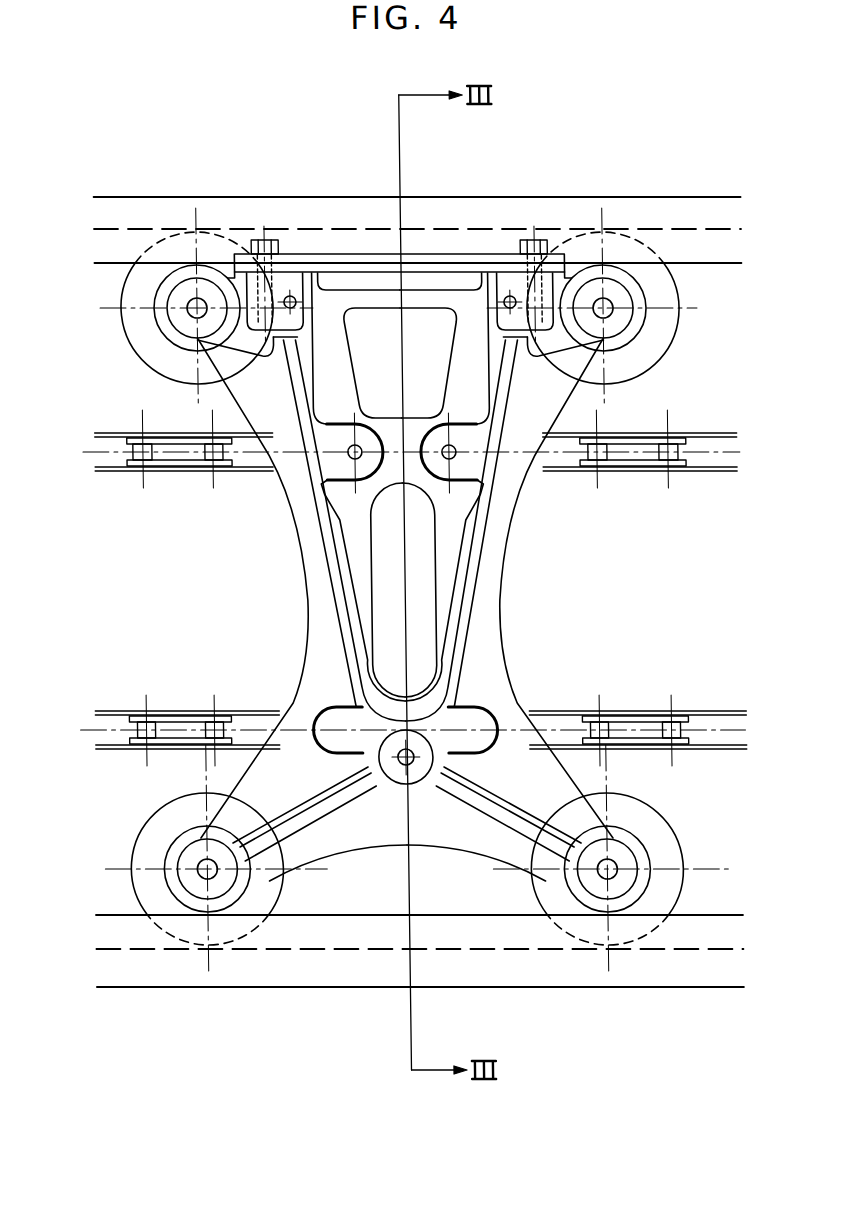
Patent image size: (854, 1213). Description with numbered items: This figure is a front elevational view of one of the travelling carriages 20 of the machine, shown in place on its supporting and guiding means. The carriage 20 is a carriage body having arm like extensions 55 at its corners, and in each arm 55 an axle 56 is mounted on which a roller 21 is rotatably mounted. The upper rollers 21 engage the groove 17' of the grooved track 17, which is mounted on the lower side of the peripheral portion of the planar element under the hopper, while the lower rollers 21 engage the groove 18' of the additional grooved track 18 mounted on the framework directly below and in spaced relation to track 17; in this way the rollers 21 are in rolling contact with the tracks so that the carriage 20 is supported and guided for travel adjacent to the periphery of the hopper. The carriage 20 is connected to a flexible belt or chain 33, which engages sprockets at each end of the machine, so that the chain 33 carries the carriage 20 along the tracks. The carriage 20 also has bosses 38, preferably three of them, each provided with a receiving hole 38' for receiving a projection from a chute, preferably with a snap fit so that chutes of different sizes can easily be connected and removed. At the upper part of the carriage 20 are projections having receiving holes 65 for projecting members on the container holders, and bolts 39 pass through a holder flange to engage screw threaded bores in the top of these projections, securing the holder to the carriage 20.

The grooved track 17 is at (417, 210).
The groove 17' is at (417, 189).
The additional grooved track 18 is at (420, 974).
The groove 18' is at (420, 991).
The carriage 20 is at (496, 555).
The roller 21 is at (162, 360).
The chain 33 is at (135, 468).
The boss 38 is at (455, 649).
The receiving hole 38' is at (347, 623).
The bolt 39 is at (269, 240).
The arm like extension 55 is at (232, 381).
The axle 56 is at (187, 306).
The receiving hole 65 is at (296, 307).